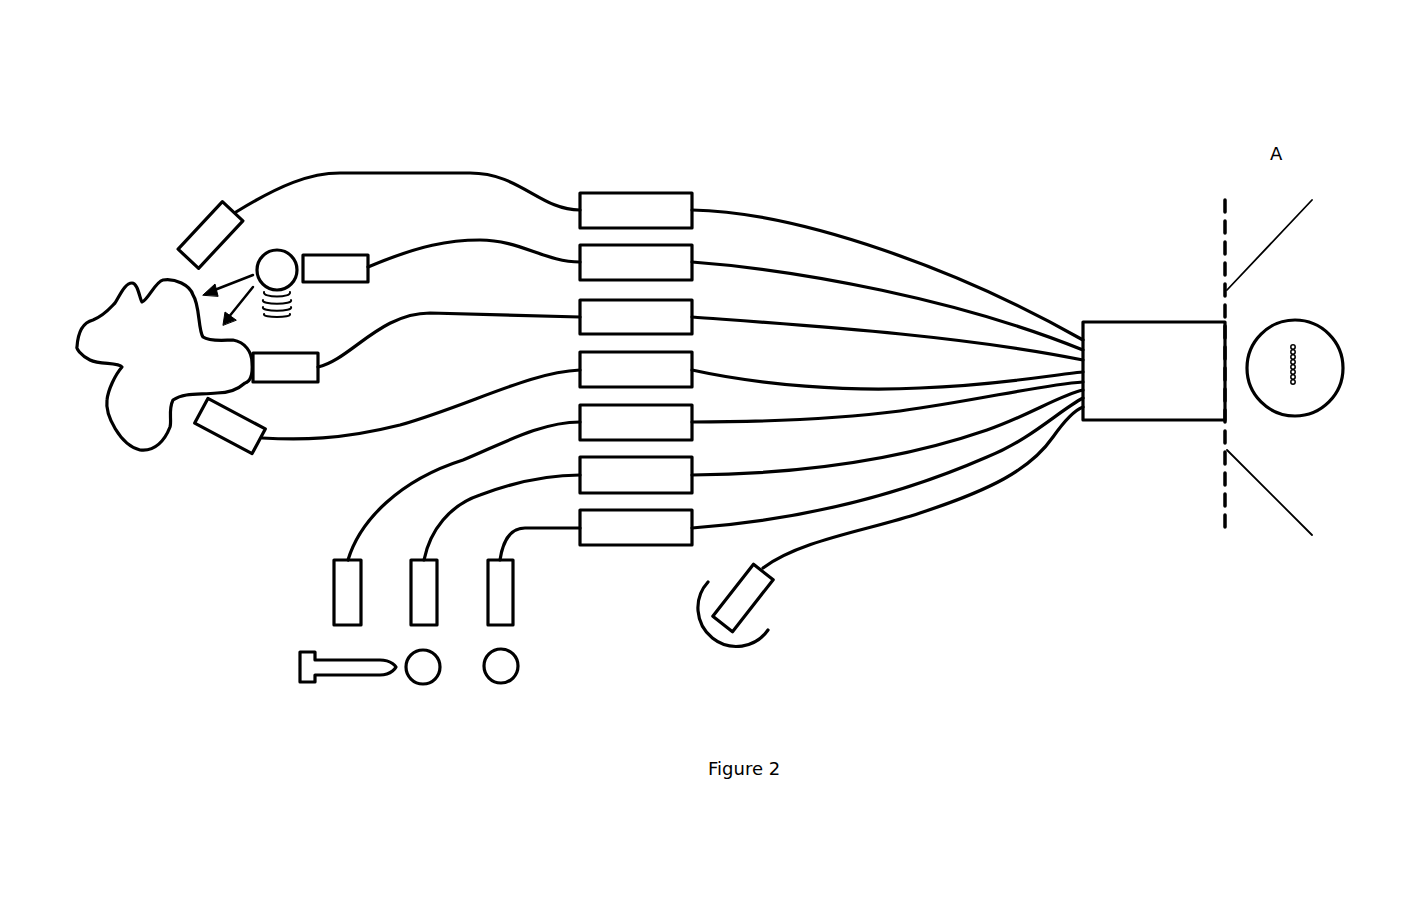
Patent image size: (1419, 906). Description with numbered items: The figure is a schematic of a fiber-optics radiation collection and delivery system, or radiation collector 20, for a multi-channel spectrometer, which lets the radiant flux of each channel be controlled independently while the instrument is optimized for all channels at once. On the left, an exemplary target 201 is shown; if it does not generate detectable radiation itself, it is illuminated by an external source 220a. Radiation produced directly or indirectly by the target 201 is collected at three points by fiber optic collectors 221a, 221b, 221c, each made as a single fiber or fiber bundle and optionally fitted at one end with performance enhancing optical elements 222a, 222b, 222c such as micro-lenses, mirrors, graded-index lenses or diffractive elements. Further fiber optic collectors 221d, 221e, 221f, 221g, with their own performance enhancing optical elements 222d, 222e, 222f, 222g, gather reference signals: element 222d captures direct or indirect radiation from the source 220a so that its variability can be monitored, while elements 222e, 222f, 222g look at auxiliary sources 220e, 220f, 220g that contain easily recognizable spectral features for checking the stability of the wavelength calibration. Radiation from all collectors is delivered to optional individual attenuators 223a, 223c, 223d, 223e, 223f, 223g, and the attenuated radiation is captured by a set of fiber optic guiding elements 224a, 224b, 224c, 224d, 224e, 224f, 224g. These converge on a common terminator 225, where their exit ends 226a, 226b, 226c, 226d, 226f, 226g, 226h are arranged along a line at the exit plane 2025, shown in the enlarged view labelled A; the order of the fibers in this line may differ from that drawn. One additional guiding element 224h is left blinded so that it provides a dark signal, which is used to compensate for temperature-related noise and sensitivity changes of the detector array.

The radiation collector 20 is at (214, 128).
The target 201 is at (164, 365).
The external source 220a is at (255, 274).
The auxiliary source 220e is at (348, 684).
The auxiliary source 220f is at (420, 683).
The auxiliary source 220g is at (507, 680).
The performance enhancing optical element 222a is at (200, 234).
The performance enhancing optical element 222b is at (285, 379).
The performance enhancing optical element 222c is at (230, 434).
The performance enhancing optical element 222d is at (335, 282).
The performance enhancing optical element 222e is at (323, 592).
The performance enhancing optical element 222f is at (401, 592).
The performance enhancing optical element 222g is at (477, 592).
The fiber optic collector 221a is at (408, 189).
The fiber optic collector 221b is at (505, 329).
The fiber optic collector 221c is at (421, 394).
The fiber optic collector 221d is at (474, 244).
The fiber optic collector 221e is at (464, 479).
The fiber optic collector 221f is at (502, 511).
The fiber optic collector 221g is at (540, 533).
The attenuator 223a is at (636, 210).
The attenuator 223c is at (636, 369).
The attenuator 223d is at (636, 262).
The attenuator 223e is at (636, 422).
The attenuator 223f is at (636, 475).
The attenuator 223g is at (636, 527).
The fiber optic guiding element 224a is at (887, 264).
The fiber optic guiding element 224b is at (887, 330).
The fiber optic guiding element 224c is at (887, 370).
The fiber optic guiding element 224d is at (887, 299).
The fiber optic guiding element 224e is at (887, 402).
The fiber optic guiding element 224f is at (887, 432).
The fiber optic guiding element 224g is at (887, 463).
The blinded guiding element 224h is at (890, 560).
The common terminator 225 is at (1154, 371).
The exit plane 2025 is at (1295, 393).
The fiber end 226a is at (1295, 347).
The fiber end 226b is at (1295, 357).
The fiber end 226c is at (1295, 362).
The fiber end 226d is at (1353, 385).
The fiber end 226f is at (1295, 367).
The fiber end 226g is at (1295, 377).
The fiber end 226h is at (1295, 382).